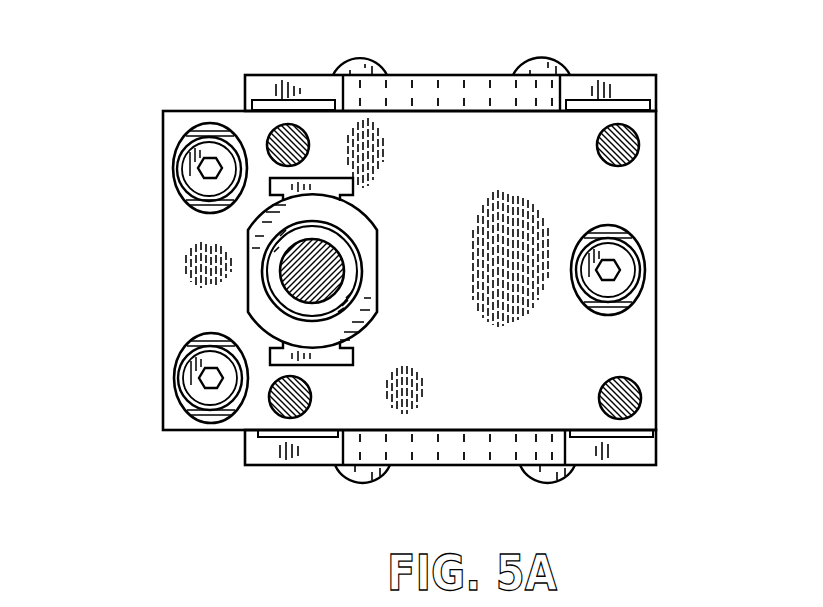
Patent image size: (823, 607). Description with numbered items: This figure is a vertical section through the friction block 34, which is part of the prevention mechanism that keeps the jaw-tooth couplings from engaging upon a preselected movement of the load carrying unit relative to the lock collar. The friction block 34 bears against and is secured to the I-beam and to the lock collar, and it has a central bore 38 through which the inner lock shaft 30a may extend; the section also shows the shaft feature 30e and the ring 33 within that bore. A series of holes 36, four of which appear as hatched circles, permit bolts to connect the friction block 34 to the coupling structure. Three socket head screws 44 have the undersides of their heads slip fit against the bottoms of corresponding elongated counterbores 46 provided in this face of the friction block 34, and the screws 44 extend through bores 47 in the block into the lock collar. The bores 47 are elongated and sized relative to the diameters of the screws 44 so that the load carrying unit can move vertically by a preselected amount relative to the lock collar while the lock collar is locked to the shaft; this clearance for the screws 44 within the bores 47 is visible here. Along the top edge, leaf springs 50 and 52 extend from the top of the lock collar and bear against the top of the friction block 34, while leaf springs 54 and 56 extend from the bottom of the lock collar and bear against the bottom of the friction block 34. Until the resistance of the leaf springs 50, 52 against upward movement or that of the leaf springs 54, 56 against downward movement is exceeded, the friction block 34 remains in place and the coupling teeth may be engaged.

The inner lock shaft 30a is at (303, 278).
The central bore 30e is at (343, 285).
The bore ring 33 is at (348, 240).
The friction block 34 is at (475, 75).
The holes 36 is at (272, 132).
The bore 38 is at (382, 258).
The socket head screws 44 is at (207, 170).
The elongated counterbores 46 is at (185, 130).
The bores 47 is at (185, 200).
The leaf spring 50 is at (260, 110).
The leaf spring 52 is at (614, 100).
The leaf spring 54 is at (312, 433).
The leaf spring 56 is at (610, 437).